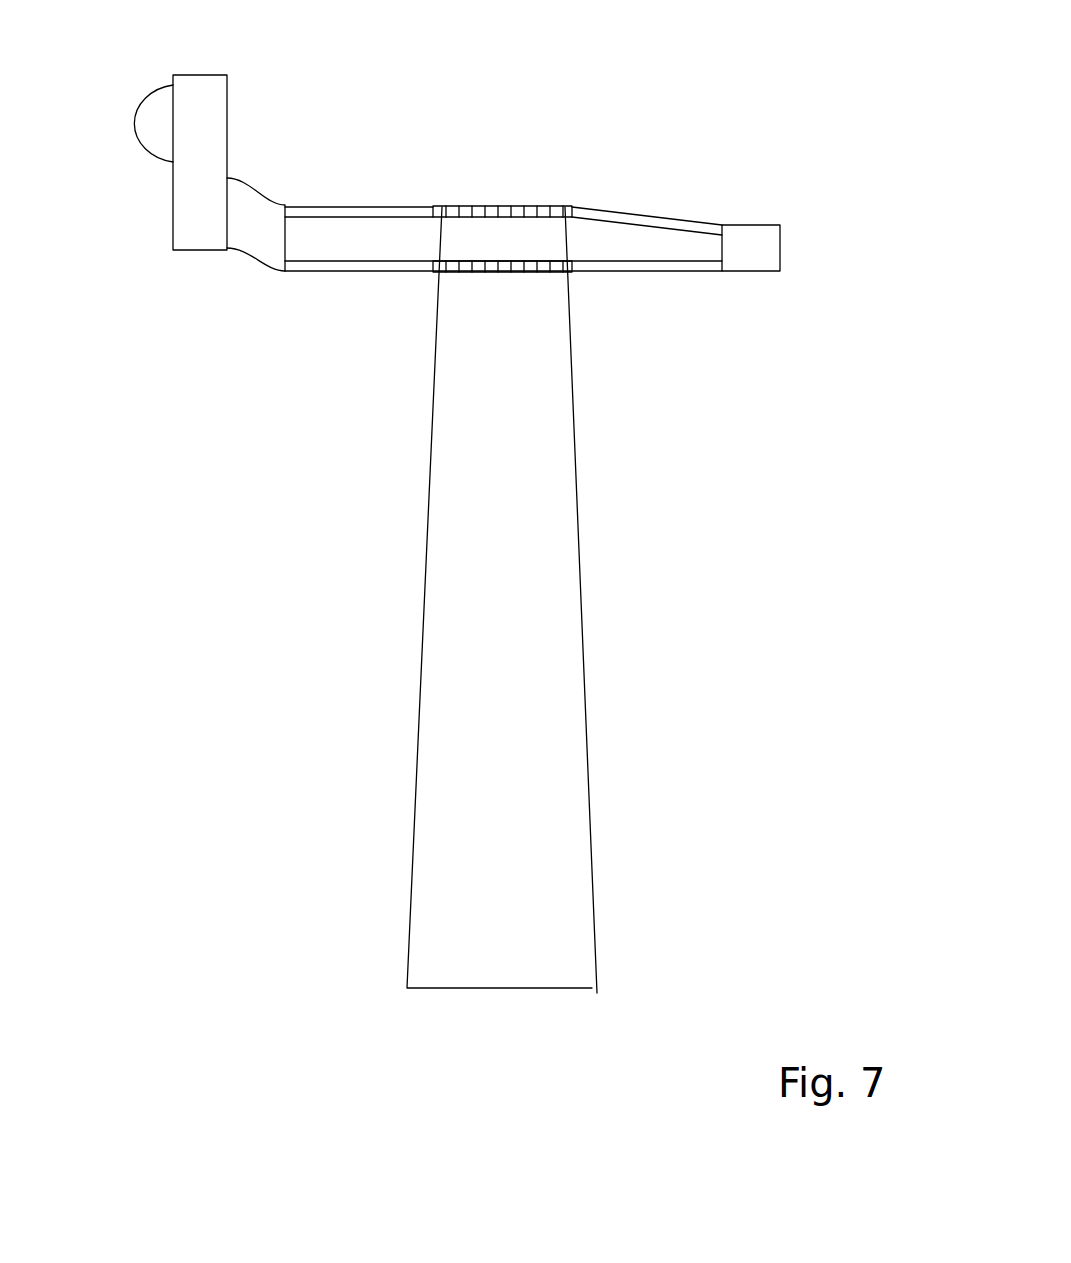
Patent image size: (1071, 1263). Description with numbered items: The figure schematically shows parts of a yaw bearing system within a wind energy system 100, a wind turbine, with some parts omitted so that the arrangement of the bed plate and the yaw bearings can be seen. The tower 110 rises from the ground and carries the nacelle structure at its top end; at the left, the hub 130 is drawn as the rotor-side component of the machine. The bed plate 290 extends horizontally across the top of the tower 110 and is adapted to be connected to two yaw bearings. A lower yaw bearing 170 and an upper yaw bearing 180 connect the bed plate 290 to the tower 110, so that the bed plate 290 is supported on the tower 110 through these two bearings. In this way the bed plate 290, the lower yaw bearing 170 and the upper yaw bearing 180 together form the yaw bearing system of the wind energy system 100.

The wind energy system 100 is at (767, 41).
The tower 110 is at (585, 747).
The hub 130 is at (145, 160).
The lower yaw bearing 170 is at (433, 272).
The upper yaw bearing 180 is at (558, 207).
The bed plate 290 is at (377, 207).